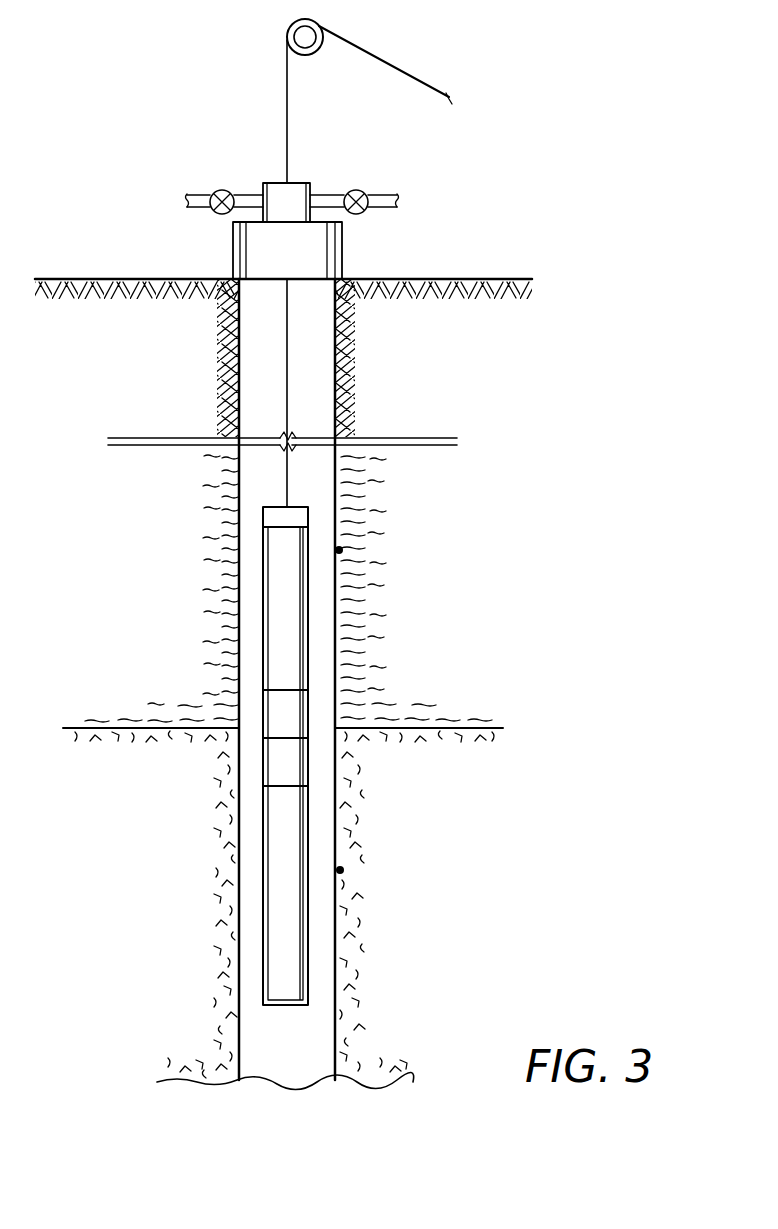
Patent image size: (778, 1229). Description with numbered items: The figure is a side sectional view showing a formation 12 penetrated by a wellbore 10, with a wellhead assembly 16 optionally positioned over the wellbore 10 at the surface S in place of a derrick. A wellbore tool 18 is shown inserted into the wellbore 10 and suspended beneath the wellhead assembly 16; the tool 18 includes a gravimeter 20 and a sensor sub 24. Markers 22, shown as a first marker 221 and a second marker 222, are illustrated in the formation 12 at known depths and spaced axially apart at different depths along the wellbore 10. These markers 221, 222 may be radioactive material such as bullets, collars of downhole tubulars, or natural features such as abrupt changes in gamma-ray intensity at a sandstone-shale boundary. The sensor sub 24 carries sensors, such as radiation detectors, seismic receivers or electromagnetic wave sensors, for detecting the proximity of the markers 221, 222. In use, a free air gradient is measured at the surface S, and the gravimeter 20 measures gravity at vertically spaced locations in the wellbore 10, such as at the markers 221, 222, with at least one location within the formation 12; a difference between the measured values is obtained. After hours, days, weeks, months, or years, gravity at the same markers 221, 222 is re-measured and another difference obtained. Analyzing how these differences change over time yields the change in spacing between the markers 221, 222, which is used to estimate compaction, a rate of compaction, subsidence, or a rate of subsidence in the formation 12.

The surface S is at (128, 278).
The wellbore 10 is at (327, 354).
The formation 12 is at (142, 513).
The wellhead assembly 16 is at (424, 173).
The wellbore tool 18 is at (362, 642).
The gravimeter 20 is at (297, 768).
The markers 22 is at (405, 707).
The first marker 221 is at (343, 550).
The second marker 222 is at (344, 868).
The sensor sub 24 is at (307, 713).